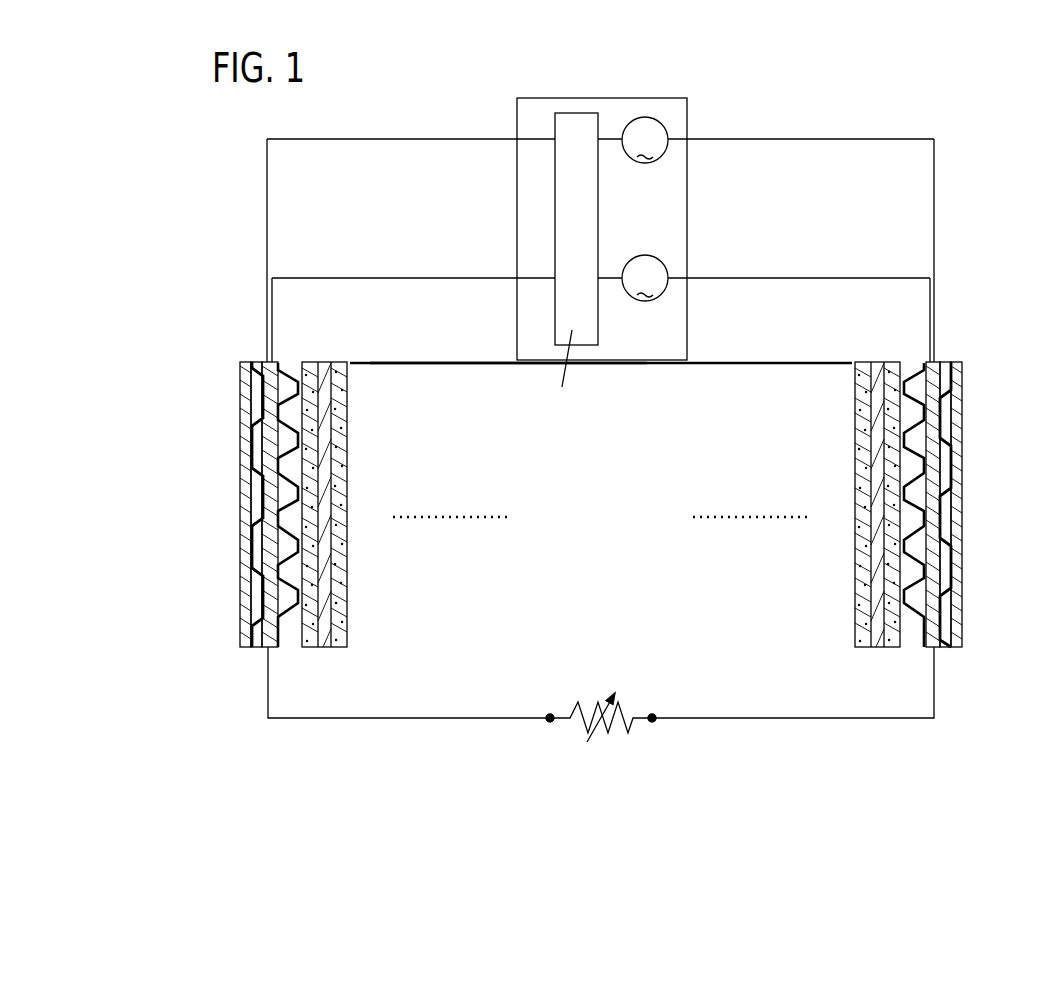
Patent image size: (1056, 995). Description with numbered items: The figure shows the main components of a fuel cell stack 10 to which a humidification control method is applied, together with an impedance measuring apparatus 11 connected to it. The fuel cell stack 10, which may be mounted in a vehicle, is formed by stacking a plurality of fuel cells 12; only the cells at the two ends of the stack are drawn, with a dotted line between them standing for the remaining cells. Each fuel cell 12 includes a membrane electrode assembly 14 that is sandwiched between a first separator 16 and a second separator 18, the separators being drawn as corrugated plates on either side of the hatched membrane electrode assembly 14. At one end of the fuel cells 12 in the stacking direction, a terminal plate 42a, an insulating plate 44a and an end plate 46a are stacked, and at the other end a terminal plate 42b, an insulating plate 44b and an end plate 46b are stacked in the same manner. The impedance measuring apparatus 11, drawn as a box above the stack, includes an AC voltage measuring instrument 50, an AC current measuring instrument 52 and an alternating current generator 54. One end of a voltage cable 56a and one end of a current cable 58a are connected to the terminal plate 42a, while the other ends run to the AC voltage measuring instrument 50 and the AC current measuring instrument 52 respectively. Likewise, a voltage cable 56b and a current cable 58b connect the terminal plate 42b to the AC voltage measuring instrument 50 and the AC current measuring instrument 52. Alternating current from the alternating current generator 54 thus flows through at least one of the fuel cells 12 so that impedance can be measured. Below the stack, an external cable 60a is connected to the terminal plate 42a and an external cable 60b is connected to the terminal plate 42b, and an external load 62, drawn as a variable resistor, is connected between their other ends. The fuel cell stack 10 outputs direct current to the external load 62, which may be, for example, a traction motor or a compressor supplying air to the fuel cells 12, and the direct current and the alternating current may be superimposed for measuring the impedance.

The fuel cell stack 10 is at (388, 91).
The impedance measuring apparatus 11 is at (692, 96).
The fuel cell 12 is at (601, 496).
The membrane electrode assembly 14 is at (323, 350).
The first separator 16 is at (371, 363).
The second separator 18 is at (285, 364).
The terminal plate 42a is at (930, 608).
The terminal plate 42b is at (272, 607).
The insulating plate 44a is at (942, 578).
The insulating plate 44b is at (262, 576).
The end plate 46a is at (955, 543).
The end plate 46b is at (248, 542).
The AC voltage measuring instrument 50 is at (633, 160).
The AC current measuring instrument 52 is at (633, 298).
The alternating current generator 54 is at (570, 113).
The voltage cable 56a is at (834, 139).
The voltage cable 56b is at (445, 139).
The current cable 58a is at (790, 277).
The current cable 58b is at (400, 277).
The external cable 60a is at (725, 719).
The external cable 60b is at (480, 719).
The external load 62 is at (621, 729).